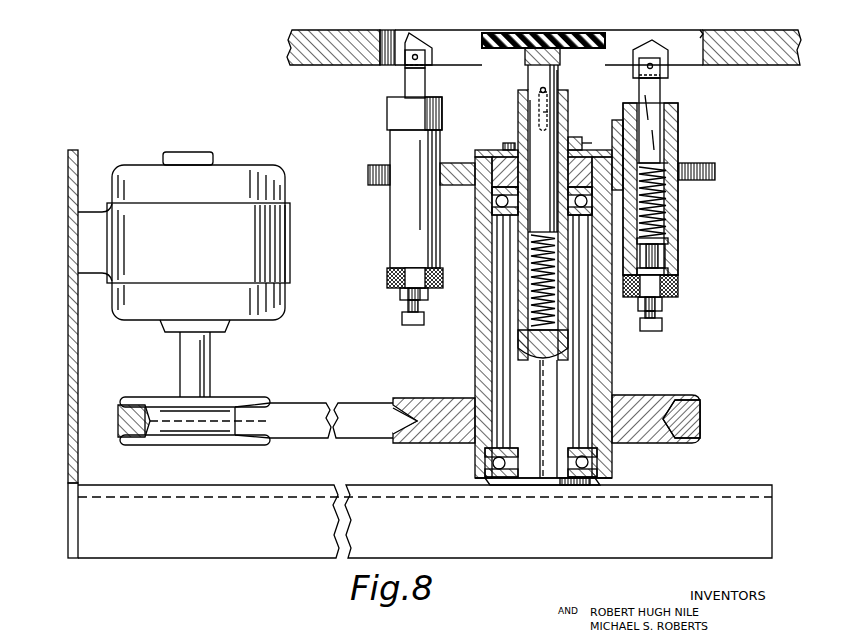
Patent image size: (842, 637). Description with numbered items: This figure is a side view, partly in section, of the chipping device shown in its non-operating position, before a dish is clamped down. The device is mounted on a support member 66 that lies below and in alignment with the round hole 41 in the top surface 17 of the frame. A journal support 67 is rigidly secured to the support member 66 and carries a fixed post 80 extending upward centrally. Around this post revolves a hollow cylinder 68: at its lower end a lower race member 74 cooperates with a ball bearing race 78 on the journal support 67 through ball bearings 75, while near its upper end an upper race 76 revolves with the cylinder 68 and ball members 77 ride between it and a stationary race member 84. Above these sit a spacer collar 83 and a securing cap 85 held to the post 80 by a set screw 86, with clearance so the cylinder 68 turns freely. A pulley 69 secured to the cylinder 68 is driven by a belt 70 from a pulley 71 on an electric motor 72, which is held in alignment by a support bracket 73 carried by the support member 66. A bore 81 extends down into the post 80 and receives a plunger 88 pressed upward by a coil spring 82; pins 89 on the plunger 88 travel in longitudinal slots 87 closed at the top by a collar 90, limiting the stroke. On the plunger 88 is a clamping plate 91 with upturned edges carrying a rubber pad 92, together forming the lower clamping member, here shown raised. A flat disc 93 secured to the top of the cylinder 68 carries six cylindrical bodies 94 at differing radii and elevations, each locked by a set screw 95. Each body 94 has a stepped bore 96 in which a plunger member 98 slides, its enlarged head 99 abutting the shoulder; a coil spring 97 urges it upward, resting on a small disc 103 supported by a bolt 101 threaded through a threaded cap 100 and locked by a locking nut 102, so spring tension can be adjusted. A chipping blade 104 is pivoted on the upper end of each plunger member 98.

The top surface 17 is at (778, 30).
The round hole 41 is at (703, 31).
The support member 66 is at (750, 485).
The journal support 67 is at (600, 482).
The hollow cylinder 68 is at (612, 375).
The pulley 69 is at (656, 395).
The belt 70 is at (368, 403).
The pulley 71 is at (254, 397).
The electric motor 72 is at (286, 300).
The support bracket 73 is at (68, 346).
The lower race member 74 is at (585, 448).
The ball bearings 75 is at (580, 458).
The upper race 76 is at (575, 215).
The ball members 77 is at (572, 216).
The ball bearing race 78 is at (602, 470).
The fixed post 80 is at (518, 106).
The bore 81 is at (556, 294).
The coil spring 82 is at (556, 308).
The spacer collar 83 is at (588, 148).
The race member 84 is at (596, 150).
The securing cap 85 is at (578, 137).
The set screw 86 is at (503, 147).
The longitudinal slots 87 is at (572, 158).
The plunger 88 is at (559, 78).
The pins 89 is at (543, 88).
The collar 90 is at (548, 112).
The clamping plate 91 is at (602, 45).
The rubber pad 92 is at (590, 33).
The disc 93 is at (460, 163).
The cylindrical body 94 is at (390, 148).
The set screw 95 is at (368, 176).
The bore 96 is at (665, 255).
The coil spring 97 is at (665, 216).
The plunger member 98 is at (428, 88).
The enlarged head 99 is at (662, 163).
The threaded cap 100 is at (443, 278).
The bolt 101 is at (418, 305).
The locking nut 102 is at (403, 296).
The small disc 103 is at (662, 241).
The chipping blade 104 is at (432, 52).